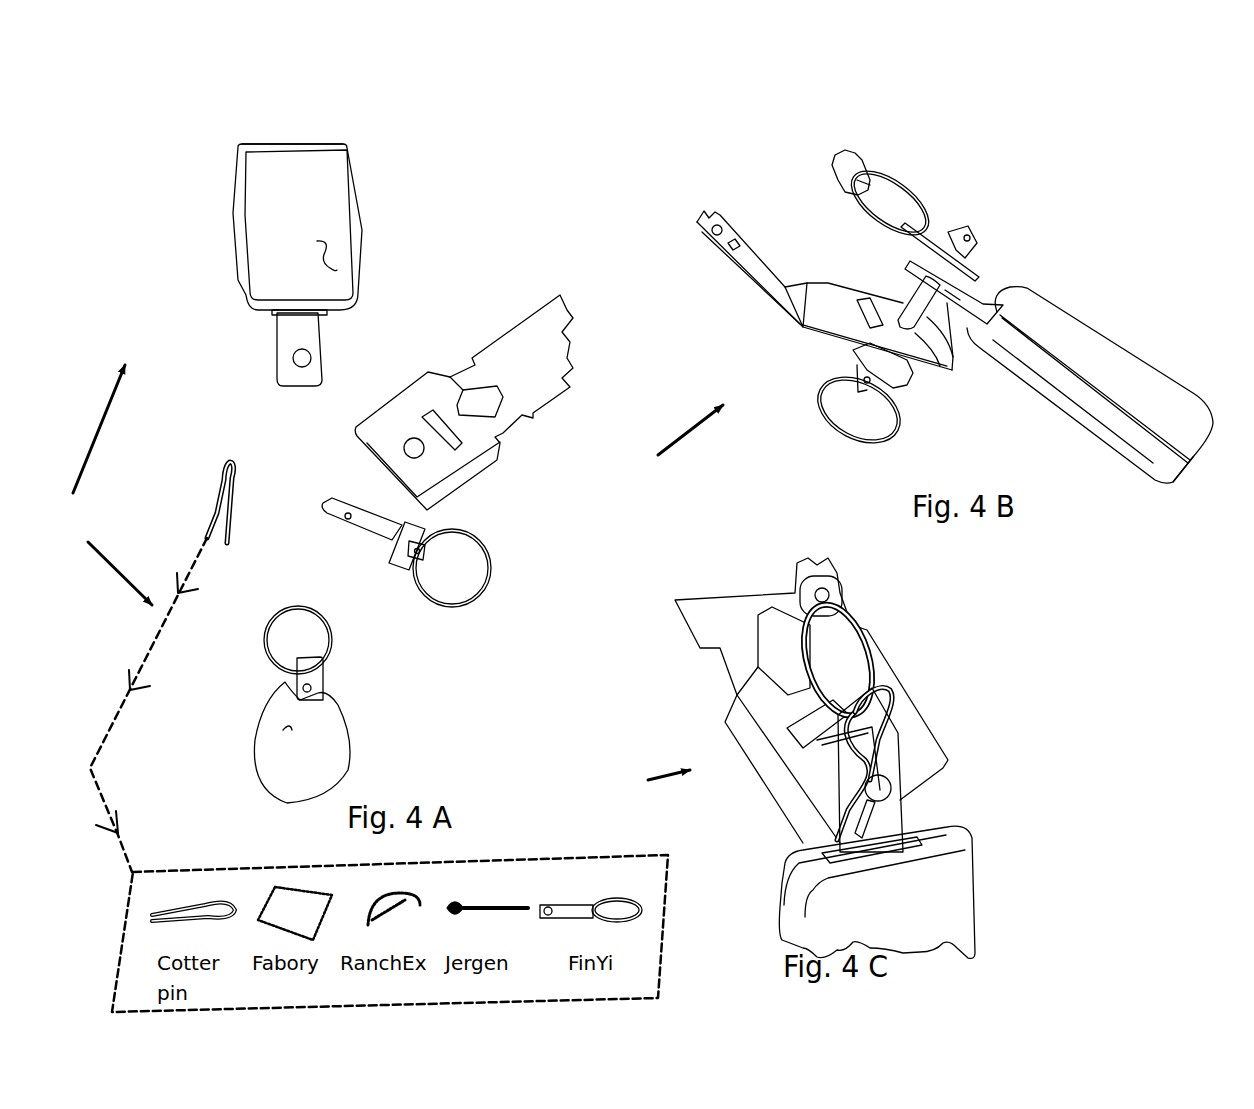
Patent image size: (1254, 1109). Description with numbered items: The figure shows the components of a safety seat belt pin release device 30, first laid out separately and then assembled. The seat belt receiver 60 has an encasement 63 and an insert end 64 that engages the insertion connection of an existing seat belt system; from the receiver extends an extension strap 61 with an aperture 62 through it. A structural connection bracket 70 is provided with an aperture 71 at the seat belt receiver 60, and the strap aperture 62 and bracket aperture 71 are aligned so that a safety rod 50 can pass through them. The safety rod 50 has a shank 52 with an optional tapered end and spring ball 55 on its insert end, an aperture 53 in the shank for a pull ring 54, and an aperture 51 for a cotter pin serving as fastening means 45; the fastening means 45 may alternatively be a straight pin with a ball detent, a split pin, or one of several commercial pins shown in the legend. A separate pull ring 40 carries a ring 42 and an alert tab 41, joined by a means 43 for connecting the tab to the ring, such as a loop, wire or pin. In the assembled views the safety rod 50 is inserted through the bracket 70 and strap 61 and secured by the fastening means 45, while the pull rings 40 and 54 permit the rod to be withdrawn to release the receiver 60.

In FIG. 4A, the safety seat belt pin release device 30 is at (130, 618).
In FIG. 4B, the safety seat belt pin release device 30 is at (683, 440).
In FIG. 4C, the safety seat belt pin release device 30 is at (649, 784).
In FIG. 4A, the pull ring 40 is at (301, 712).
In FIG. 4A, the alert tab 41 is at (288, 728).
In FIG. 4A, the ring 42 is at (267, 648).
In FIG. 4B, the ring 42 is at (873, 177).
In FIG. 4C, the ring 42 is at (848, 622).
In FIG. 4A, the means for connecting alert tab to ring 43 is at (300, 688).
In FIG. 4B, the means for connecting alert tab to ring 43 is at (843, 173).
In FIG. 4C, the means for connecting alert tab to ring 43 is at (830, 593).
In FIG. 4A, the fastening means 45 is at (222, 503).
In FIG. 4B, the fastening means 45 is at (933, 238).
In FIG. 4C, the fastening means 45 is at (864, 764).
In FIG. 4A, the safety rod 50 is at (419, 554).
In FIG. 4C, the safety rod 50 is at (959, 798).
In FIG. 4A, the aperture for cotter pin 51 is at (329, 511).
In FIG. 4A, the shank 52 is at (367, 540).
In FIG. 4B, the shank 52 is at (913, 285).
In FIG. 4A, the aperture in shank 53 is at (421, 541).
In FIG. 4A, the pull ring of safety rod 54 is at (490, 574).
In FIG. 4B, the pull ring of safety rod 54 is at (820, 407).
In FIG. 4A, the tapered end and spring ball 55 is at (325, 498).
In FIG. 4C, the tapered end and spring ball 55 is at (880, 790).
In FIG. 4A, the seat belt receiver 60 is at (275, 253).
In FIG. 4B, the seat belt receiver 60 is at (1059, 382).
In FIG. 4C, the seat belt receiver 60 is at (931, 823).
In FIG. 4A, the extension strap 61 is at (246, 362).
In FIG. 4B, the extension strap 61 is at (991, 313).
In FIG. 4C, the extension strap 61 is at (860, 770).
In FIG. 4A, the aperture in strap 62 is at (292, 365).
In FIG. 4B, the aperture in strap 62 is at (950, 303).
In FIG. 4A, the encasement 63 is at (330, 260).
In FIG. 4A, the insert end of receiver 64 is at (312, 134).
In FIG. 4A, the structural connection bracket 70 is at (496, 402).
In FIG. 4B, the structural connection bracket 70 is at (811, 325).
In FIG. 4C, the structural connection bracket 70 is at (912, 730).
In FIG. 4A, the aperture 71 is at (420, 451).
In FIG. 4B, the aperture 71 is at (920, 338).